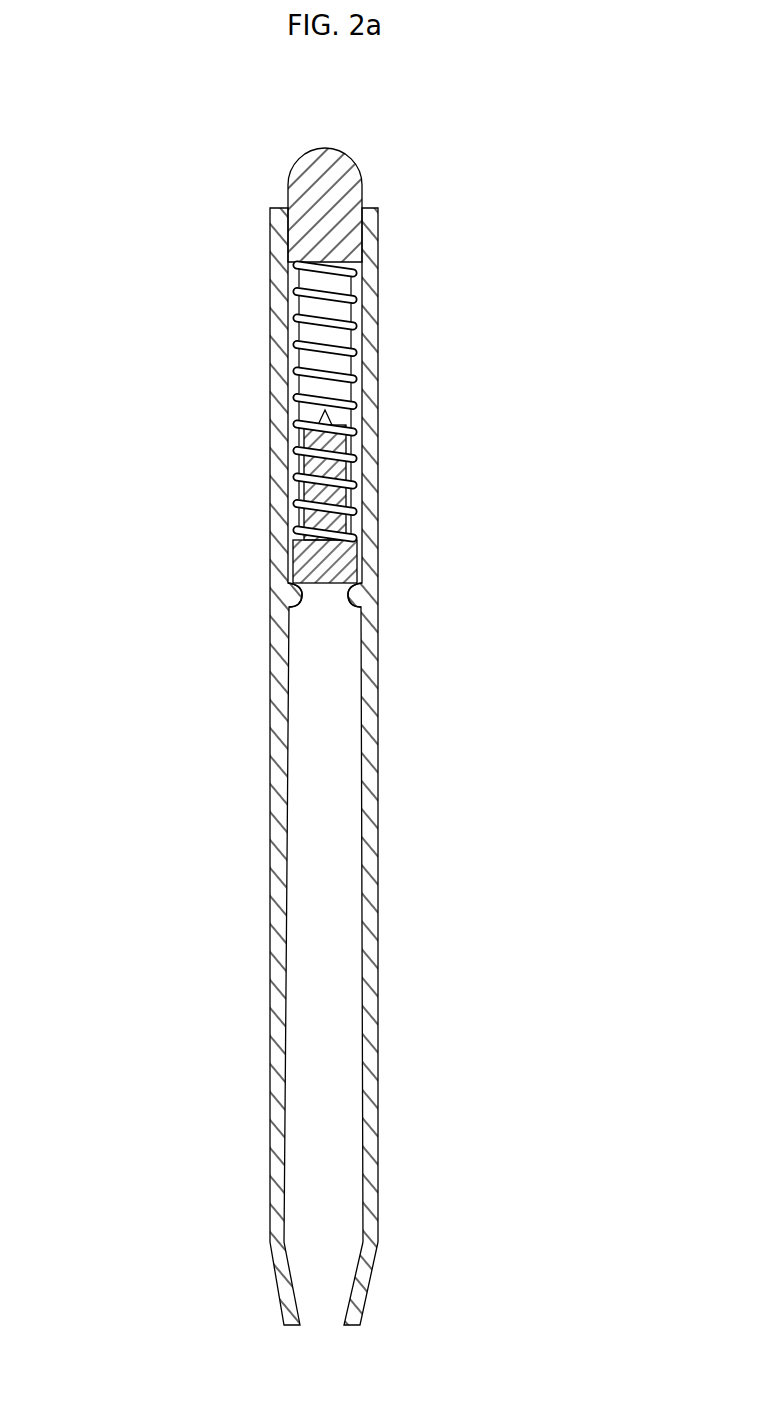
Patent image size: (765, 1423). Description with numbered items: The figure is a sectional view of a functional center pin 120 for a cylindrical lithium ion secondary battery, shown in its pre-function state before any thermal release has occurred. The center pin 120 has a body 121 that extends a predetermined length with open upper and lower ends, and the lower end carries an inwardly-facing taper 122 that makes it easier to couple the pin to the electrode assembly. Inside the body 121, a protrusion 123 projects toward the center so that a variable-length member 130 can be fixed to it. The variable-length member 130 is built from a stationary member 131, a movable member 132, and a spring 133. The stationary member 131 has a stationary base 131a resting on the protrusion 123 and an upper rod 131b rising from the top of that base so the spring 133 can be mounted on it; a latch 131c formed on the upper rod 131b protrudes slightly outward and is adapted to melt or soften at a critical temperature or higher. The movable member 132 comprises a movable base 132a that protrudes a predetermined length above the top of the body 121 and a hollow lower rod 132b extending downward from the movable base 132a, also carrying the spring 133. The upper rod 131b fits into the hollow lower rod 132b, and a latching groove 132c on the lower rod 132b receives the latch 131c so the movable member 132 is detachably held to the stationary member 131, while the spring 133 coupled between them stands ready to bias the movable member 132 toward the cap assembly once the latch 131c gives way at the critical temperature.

The center pin 120 is at (323, 766).
The body 121 is at (280, 946).
The inwardly-facing taper 122 is at (283, 1286).
The protrusion 123 is at (302, 597).
The variable-length member 130 is at (326, 341).
The stationary member 131 is at (214, 496).
The stationary base 131a is at (297, 558).
The upper rod 131b is at (297, 520).
The latch 131c is at (300, 461).
The movable member 132 is at (326, 365).
The movable base 132a is at (360, 190).
The lower rod 132b is at (362, 291).
The latching groove 132c is at (428, 388).
The spring 133 is at (295, 318).